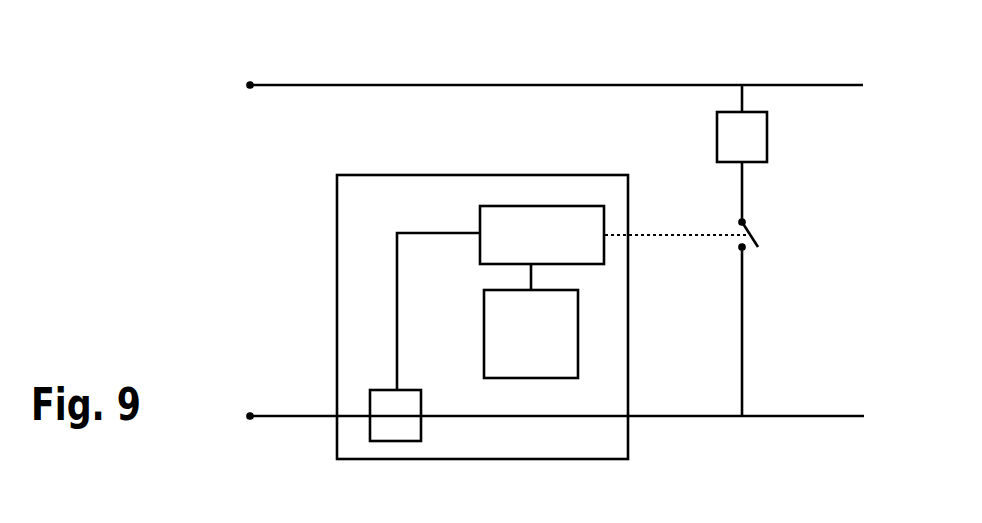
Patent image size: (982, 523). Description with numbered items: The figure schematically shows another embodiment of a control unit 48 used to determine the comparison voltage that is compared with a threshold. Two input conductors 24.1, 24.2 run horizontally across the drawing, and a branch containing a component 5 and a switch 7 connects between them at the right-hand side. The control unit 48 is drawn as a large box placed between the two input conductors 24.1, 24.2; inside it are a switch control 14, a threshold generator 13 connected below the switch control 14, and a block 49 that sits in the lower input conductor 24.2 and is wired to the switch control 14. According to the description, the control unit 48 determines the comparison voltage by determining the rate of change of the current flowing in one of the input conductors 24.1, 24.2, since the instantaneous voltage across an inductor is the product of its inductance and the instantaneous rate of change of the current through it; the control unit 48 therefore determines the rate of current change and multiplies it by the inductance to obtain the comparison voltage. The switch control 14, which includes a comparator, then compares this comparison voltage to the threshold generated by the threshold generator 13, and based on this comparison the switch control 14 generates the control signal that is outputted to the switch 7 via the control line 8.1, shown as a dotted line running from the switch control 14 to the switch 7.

The input conductor 24.1 is at (287, 83).
The input conductor 24.2 is at (280, 417).
The load / consumer 5 is at (742, 153).
The switch 7 is at (766, 232).
The control line 8.1 is at (696, 233).
The control unit 48 is at (482, 317).
The switch control 14 is at (500, 298).
The threshold generator 13 is at (531, 321).
The measuring unit 49 is at (395, 415).